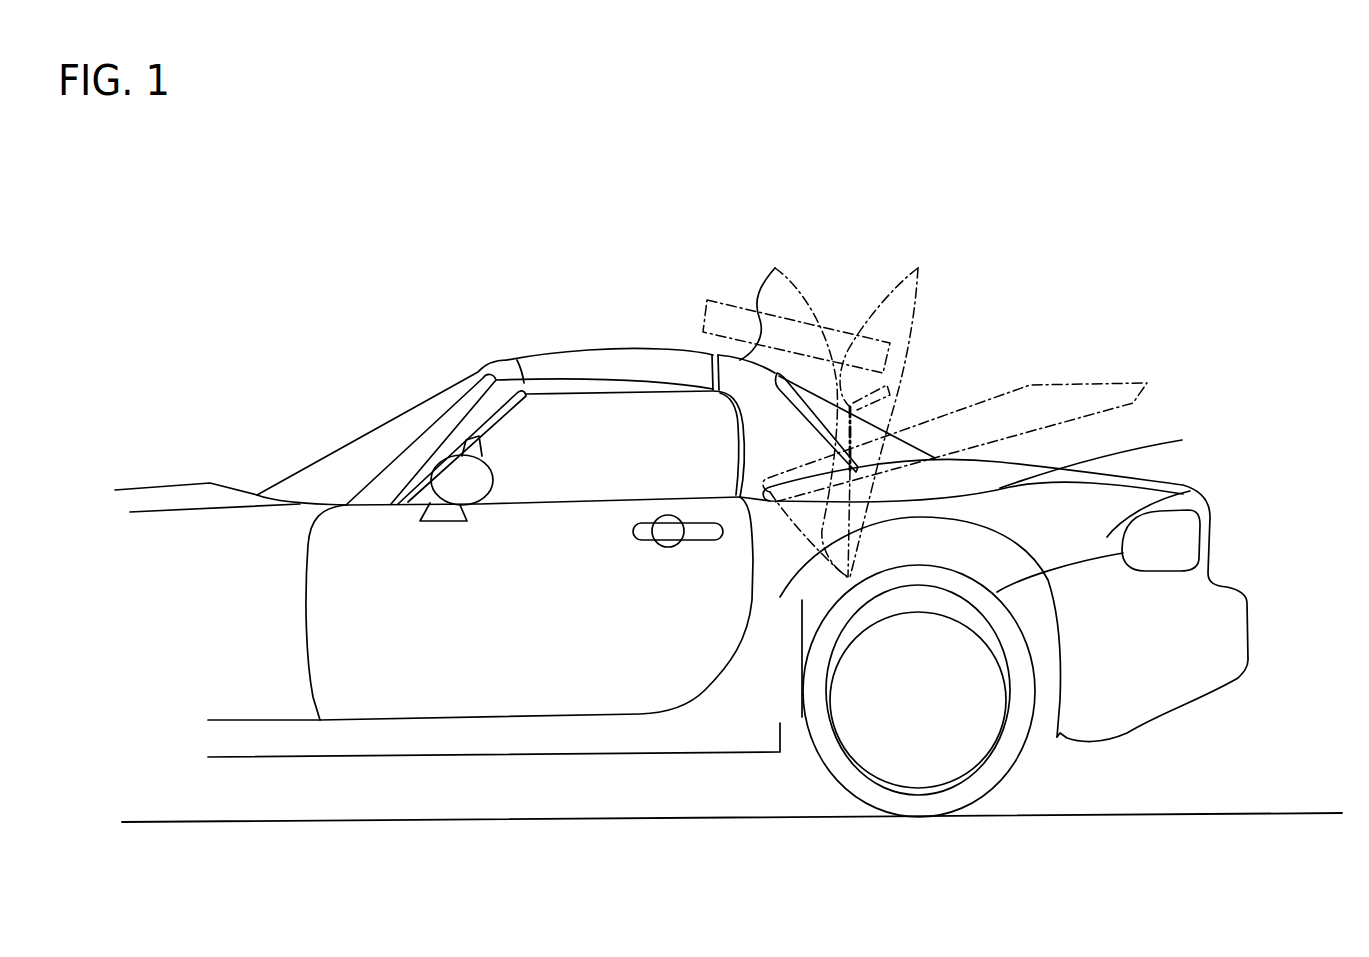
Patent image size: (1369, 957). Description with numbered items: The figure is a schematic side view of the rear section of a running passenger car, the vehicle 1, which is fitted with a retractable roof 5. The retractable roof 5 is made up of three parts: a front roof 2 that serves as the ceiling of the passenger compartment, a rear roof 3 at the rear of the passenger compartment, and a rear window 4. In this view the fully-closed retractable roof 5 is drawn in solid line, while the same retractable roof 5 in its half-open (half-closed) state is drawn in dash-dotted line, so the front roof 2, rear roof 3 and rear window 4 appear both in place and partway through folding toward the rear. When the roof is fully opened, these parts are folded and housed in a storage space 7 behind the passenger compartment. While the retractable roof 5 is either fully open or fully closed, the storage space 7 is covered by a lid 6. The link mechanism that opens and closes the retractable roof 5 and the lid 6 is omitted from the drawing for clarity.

The vehicle 1 is at (352, 334).
The front roof 2 is at (649, 351).
The rear roof 3 is at (793, 403).
The rear window 4 is at (884, 403).
The retractable roof 5 is at (945, 238).
The lid 6 is at (1133, 403).
The storage space 7 is at (802, 598).